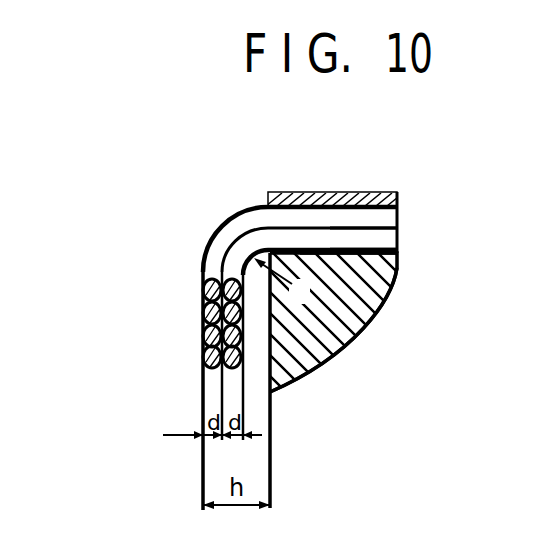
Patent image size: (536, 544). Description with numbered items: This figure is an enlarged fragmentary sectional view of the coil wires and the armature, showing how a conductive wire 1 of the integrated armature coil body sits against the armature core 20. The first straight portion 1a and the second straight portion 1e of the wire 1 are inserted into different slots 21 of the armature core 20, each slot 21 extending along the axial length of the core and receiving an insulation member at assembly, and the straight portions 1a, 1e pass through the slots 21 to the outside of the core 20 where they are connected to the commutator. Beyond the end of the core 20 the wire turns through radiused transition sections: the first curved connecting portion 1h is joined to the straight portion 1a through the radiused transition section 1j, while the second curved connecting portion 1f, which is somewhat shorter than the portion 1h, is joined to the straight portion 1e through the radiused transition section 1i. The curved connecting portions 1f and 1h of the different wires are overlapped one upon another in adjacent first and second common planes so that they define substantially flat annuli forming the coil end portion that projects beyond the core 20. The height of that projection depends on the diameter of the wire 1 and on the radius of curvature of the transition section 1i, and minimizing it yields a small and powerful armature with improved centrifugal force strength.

The conductive wire 1 is at (222, 268).
The first straight portion 1a is at (348, 220).
The second straight portion 1e is at (377, 243).
The second curved connecting portion 1f is at (318, 366).
The first curved connecting portion 1h is at (205, 312).
The radiused transition section 1i is at (256, 240).
The radiused transition section 1j is at (227, 223).
The armature core 20 is at (370, 313).
The slot 21 is at (398, 250).